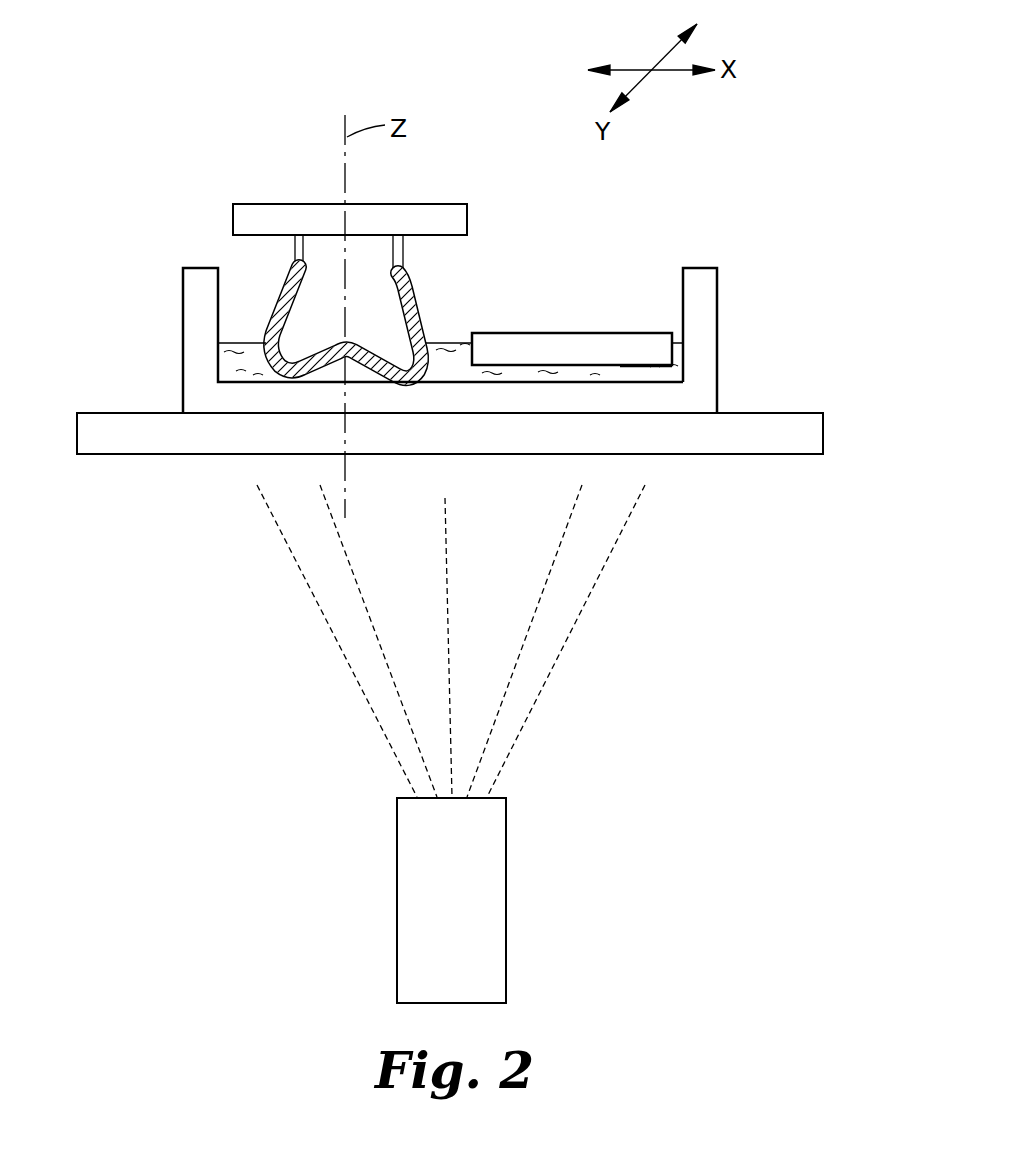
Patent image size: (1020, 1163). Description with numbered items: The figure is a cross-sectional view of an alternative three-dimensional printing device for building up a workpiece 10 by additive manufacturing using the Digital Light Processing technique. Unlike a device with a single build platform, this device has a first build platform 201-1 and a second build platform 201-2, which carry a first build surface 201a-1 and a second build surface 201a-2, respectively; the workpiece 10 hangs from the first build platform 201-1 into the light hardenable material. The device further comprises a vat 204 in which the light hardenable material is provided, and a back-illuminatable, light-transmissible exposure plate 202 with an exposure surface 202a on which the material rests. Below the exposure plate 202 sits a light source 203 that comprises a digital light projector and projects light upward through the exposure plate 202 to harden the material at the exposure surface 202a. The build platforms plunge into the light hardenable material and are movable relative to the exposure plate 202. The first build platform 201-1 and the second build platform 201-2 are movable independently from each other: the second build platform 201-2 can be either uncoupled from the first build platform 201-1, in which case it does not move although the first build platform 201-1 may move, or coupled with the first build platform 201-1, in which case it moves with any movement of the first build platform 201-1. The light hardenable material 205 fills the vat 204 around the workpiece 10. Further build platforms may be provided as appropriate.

The workpiece 10 is at (243, 262).
The first build platform 201-1 is at (445, 213).
The first build surface 201a-1 is at (453, 237).
The second build platform 201-2 is at (567, 343).
The second build surface 201a-2 is at (638, 365).
The exposure plate 202 is at (132, 445).
The exposure surface 202a is at (85, 412).
The light source 203 is at (485, 907).
The vat 204 is at (702, 292).
The liquid resin 205 is at (227, 365).